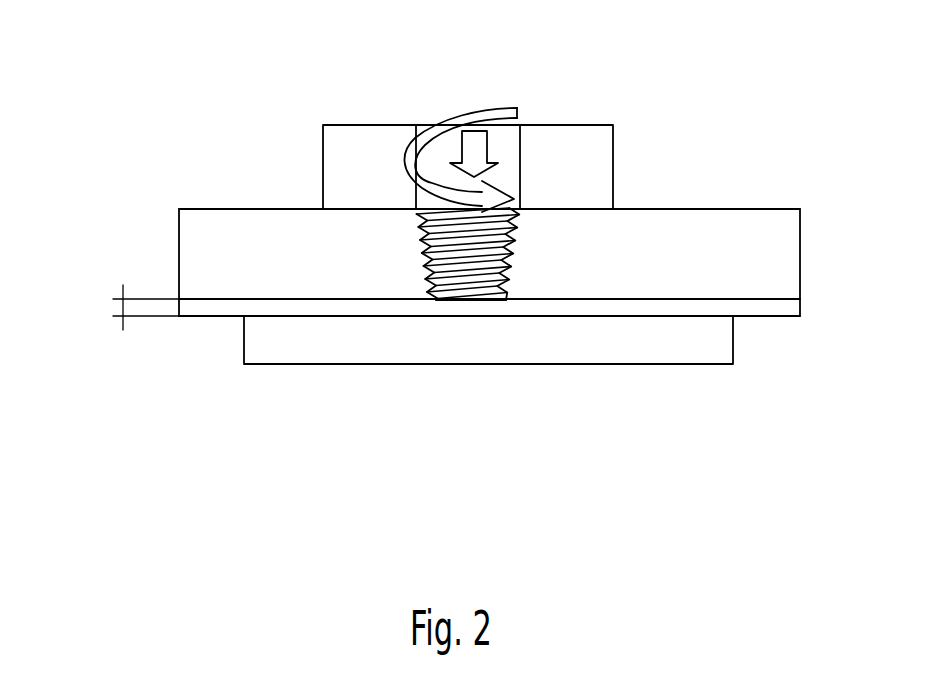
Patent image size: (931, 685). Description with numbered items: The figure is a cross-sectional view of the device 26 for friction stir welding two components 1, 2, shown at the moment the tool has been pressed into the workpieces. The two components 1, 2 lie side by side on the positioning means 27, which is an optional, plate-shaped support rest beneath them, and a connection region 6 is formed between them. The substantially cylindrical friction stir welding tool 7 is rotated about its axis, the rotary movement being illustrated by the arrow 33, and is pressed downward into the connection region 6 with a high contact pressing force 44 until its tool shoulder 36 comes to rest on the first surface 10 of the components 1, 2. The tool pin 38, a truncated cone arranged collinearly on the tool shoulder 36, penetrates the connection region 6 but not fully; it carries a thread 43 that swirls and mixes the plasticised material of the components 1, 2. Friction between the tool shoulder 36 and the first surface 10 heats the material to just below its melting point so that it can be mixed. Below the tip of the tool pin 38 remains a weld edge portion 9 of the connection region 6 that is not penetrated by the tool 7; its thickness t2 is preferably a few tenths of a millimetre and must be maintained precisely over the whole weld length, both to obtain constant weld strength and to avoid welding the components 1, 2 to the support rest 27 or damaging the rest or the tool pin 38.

The component 1 is at (240, 270).
The component 2 is at (744, 267).
The connection region 6 is at (537, 277).
The friction stir welding tool 7 is at (584, 110).
The weld edge portion 9 is at (468, 302).
The first surface 10 is at (402, 210).
The device 26 is at (213, 75).
The positioning means 27 is at (268, 365).
The arrow 33 is at (502, 107).
The tool shoulder 36 is at (368, 208).
The tool pin 38 is at (518, 224).
The thread 43 is at (513, 257).
The contact pressing force 44 is at (473, 145).
The thickness t2 is at (135, 307).